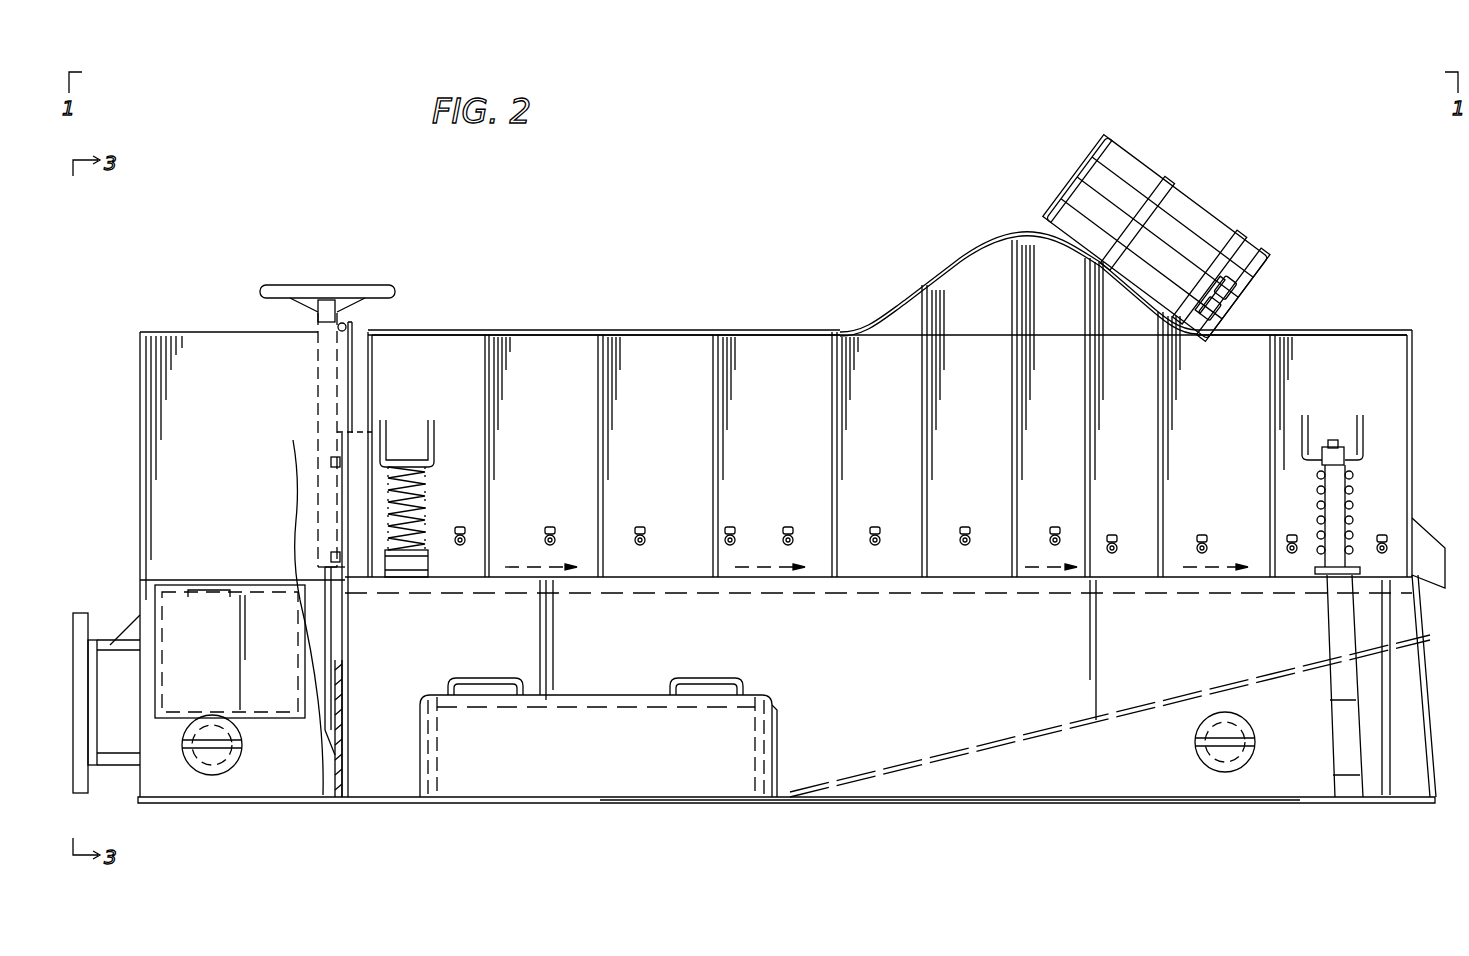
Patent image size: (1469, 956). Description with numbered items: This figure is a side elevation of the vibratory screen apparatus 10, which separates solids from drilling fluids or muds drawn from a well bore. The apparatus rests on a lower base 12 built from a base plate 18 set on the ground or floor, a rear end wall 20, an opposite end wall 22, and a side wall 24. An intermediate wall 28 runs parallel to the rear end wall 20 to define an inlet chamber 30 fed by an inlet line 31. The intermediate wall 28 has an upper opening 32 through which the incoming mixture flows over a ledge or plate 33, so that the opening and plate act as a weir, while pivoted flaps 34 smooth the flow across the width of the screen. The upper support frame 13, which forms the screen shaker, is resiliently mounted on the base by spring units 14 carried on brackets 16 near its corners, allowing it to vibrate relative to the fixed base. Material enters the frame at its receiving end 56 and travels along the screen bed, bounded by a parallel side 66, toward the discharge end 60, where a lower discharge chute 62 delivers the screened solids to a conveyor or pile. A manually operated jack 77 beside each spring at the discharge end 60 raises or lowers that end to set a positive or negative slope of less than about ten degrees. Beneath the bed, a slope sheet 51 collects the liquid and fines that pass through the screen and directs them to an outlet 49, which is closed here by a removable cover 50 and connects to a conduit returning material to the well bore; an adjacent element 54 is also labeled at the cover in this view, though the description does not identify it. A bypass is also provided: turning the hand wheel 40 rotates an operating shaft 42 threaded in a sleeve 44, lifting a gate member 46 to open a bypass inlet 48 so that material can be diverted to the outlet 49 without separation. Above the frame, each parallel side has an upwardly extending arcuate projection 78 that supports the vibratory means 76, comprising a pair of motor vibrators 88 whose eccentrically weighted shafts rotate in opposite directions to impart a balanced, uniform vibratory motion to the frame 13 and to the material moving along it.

The vibratory screen apparatus 10 is at (665, 284).
The lower base 12 is at (401, 793).
The upper support frame 13 is at (548, 358).
The spring units 14 is at (420, 495).
The brackets 16 is at (425, 420).
The base plate 18 is at (947, 803).
The rear end wall 20 is at (138, 478).
The end wall 22 is at (1432, 680).
The side wall 24 is at (975, 683).
The intermediate wall 28 is at (352, 652).
The inlet chamber 30 is at (310, 660).
The inlet line 31 is at (118, 660).
The upper opening 32 is at (348, 430).
The ledge or plate 33 is at (340, 448).
The flaps 34 is at (348, 365).
The hand wheel 40 is at (300, 293).
The operating shaft 42 is at (328, 602).
The sleeve 44 is at (320, 518).
The gate member 46 is at (345, 700).
The bypass inlet 48 is at (347, 735).
The outlet 49 is at (588, 710).
The removable cover 50 is at (638, 768).
The slope sheet 51 is at (1145, 705).
The drawer end wall 54 is at (772, 750).
The material receiving end 56 is at (372, 392).
The discharge end 60 is at (1413, 392).
The discharge chute 62 is at (1428, 545).
The side 66 is at (798, 481).
The vibratory means 76 is at (1205, 181).
The manually operated jack 77 is at (1340, 520).
The arcuate projection 78 is at (972, 272).
The motor vibrators 88 is at (1252, 256).